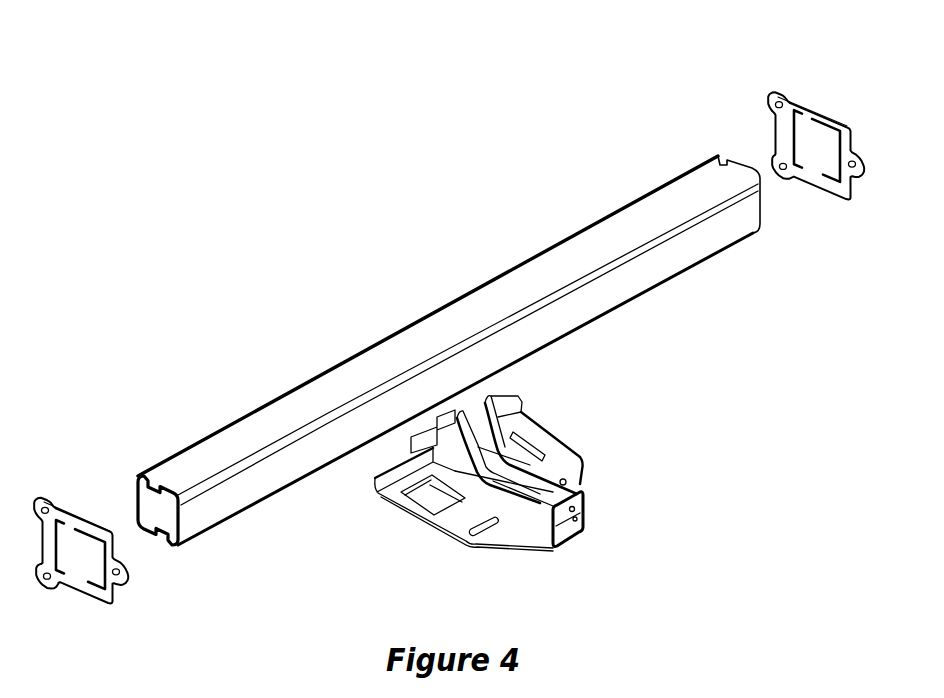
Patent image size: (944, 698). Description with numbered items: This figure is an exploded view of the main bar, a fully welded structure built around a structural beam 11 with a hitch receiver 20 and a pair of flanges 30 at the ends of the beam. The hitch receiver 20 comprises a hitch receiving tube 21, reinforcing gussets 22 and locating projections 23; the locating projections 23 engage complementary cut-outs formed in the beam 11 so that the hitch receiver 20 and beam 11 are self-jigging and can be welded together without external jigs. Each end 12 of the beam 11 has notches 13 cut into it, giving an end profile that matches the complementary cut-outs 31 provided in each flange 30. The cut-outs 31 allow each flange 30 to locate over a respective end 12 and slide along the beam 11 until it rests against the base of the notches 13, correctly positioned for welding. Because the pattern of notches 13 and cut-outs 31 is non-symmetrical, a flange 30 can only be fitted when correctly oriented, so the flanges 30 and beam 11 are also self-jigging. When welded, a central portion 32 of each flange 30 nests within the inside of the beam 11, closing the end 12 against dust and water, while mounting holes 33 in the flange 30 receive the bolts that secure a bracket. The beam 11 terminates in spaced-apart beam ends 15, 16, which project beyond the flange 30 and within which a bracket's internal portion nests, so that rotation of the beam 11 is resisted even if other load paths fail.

The structural beam 11 is at (437, 330).
The end of the beam 12 is at (705, 174).
The notch 13 is at (730, 160).
The beam end 15 is at (137, 495).
The beam end 16 is at (186, 515).
The hitch receiver 20 is at (470, 504).
The hitch receiving tube 21 is at (572, 533).
The reinforcing gusset 22 is at (558, 462).
The locating projection 23 is at (410, 446).
The flange 30 is at (460, 347).
The cut-out 31 is at (90, 597).
The central portion 32 is at (72, 573).
The mounting hole 33 is at (125, 590).